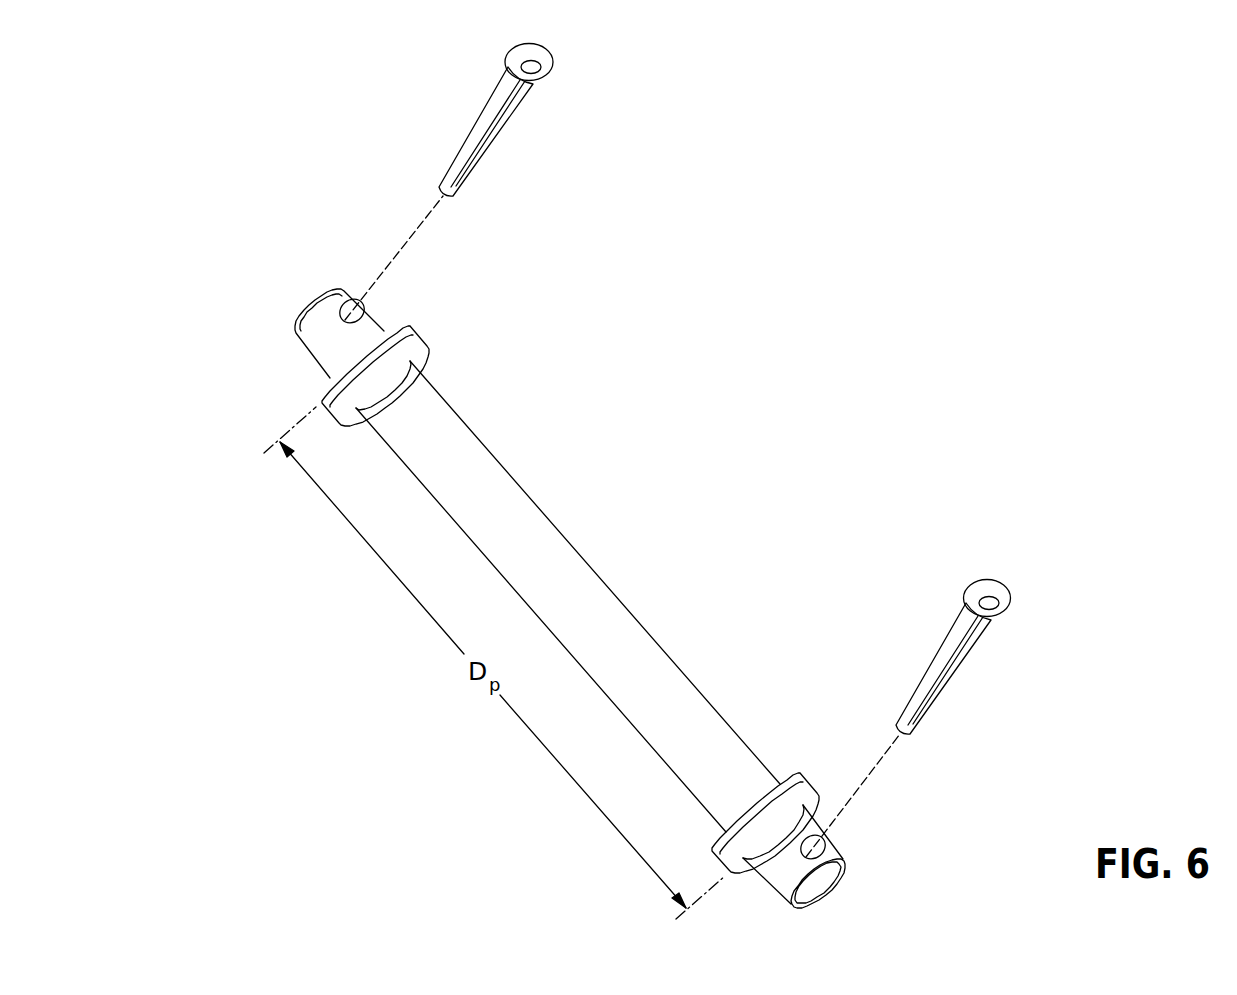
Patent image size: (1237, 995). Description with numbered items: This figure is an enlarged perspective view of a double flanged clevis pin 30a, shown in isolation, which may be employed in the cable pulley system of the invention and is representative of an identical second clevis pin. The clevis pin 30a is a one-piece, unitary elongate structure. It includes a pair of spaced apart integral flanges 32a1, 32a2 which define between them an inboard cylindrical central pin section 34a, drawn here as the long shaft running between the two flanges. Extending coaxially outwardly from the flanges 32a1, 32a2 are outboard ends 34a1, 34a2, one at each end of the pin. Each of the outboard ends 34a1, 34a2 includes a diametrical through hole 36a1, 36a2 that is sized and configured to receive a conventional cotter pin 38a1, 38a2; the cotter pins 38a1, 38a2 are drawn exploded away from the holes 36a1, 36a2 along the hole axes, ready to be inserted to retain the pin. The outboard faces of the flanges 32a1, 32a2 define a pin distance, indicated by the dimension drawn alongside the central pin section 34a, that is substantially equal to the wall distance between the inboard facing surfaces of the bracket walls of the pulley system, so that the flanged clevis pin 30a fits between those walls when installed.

The clevis pin 30a is at (640, 418).
The flange 32a1 is at (793, 787).
The flange 32a2 is at (412, 337).
The inboard cylindrical central pin section 34a is at (536, 538).
The outboard end 34a1 is at (781, 884).
The outboard end 34a2 is at (313, 343).
The diametrical through hole 36a1 is at (822, 853).
The diametrical through hole 36a2 is at (355, 303).
The cotter pin 38a1 is at (987, 578).
The cotter pin 38a2 is at (548, 68).